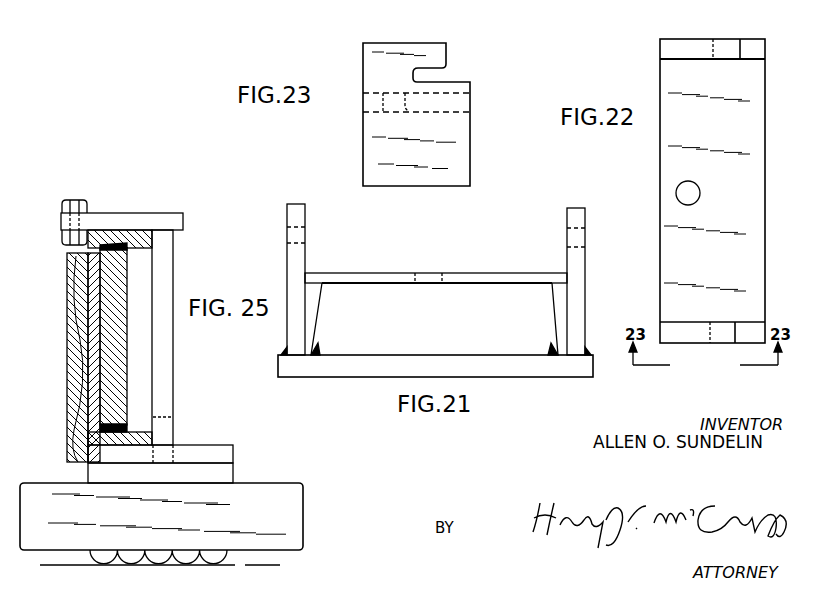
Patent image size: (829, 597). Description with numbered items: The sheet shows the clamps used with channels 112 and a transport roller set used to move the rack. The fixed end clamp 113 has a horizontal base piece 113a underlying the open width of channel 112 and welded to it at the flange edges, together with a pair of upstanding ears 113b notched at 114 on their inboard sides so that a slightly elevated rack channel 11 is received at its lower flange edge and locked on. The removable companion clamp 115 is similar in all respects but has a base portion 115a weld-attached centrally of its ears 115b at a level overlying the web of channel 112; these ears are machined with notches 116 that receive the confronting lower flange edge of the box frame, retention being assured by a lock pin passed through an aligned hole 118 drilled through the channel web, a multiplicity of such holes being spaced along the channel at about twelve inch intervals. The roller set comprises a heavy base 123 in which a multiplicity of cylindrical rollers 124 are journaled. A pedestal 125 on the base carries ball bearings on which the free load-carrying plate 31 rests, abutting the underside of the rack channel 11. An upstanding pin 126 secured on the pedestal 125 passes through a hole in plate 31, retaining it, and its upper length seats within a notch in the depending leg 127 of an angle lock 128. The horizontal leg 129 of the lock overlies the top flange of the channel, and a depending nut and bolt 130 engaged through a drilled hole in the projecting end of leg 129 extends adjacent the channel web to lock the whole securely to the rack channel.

In FIG. 25, the rack channel 11 is at (86, 331).
In FIG. 25, the free load-carrying plate 31 is at (228, 456).
In FIG. 21, the channel 112 is at (372, 274).
In FIG. 21, the fixed end clamp 113 is at (336, 382).
In FIG. 21, the horizontal base piece 113a is at (358, 362).
In FIG. 21, the upstanding ears 113b is at (298, 268).
In FIG. 21, the notch 114 is at (285, 240).
In FIG. 22, the removable companion clamp 115 is at (735, 82).
In FIG. 23, the base portion 115a is at (450, 112).
In FIG. 22, the base portion 115a is at (735, 271).
In FIG. 23, the ears 115b is at (450, 165).
In FIG. 22, the ears 115b is at (683, 60).
In FIG. 23, the notches 116 is at (419, 76).
In FIG. 22, the notches 116 is at (718, 50).
In FIG. 21, the hole 118 is at (430, 273).
In FIG. 23, the hole 118 is at (407, 113).
In FIG. 22, the hole 118 is at (700, 192).
In FIG. 25, the heavy base 123 is at (297, 518).
In FIG. 25, the cylindrical rollers 124 is at (192, 563).
In FIG. 25, the pedestal 125 is at (228, 484).
In FIG. 25, the upstanding pin 126 is at (165, 434).
In FIG. 25, the depending leg 127 is at (167, 376).
In FIG. 25, the angle lock 128 is at (172, 211).
In FIG. 25, the horizontal leg 129 is at (120, 216).
In FIG. 25, the nut and bolt 130 is at (83, 200).